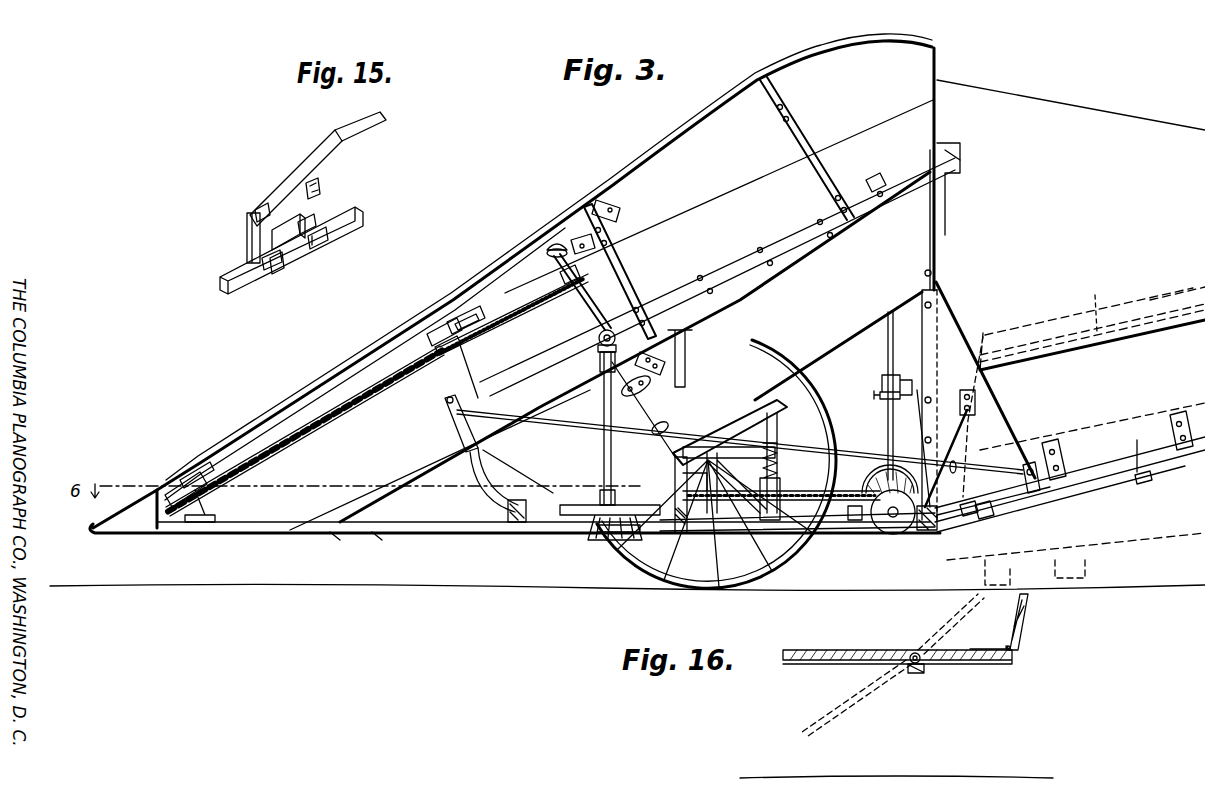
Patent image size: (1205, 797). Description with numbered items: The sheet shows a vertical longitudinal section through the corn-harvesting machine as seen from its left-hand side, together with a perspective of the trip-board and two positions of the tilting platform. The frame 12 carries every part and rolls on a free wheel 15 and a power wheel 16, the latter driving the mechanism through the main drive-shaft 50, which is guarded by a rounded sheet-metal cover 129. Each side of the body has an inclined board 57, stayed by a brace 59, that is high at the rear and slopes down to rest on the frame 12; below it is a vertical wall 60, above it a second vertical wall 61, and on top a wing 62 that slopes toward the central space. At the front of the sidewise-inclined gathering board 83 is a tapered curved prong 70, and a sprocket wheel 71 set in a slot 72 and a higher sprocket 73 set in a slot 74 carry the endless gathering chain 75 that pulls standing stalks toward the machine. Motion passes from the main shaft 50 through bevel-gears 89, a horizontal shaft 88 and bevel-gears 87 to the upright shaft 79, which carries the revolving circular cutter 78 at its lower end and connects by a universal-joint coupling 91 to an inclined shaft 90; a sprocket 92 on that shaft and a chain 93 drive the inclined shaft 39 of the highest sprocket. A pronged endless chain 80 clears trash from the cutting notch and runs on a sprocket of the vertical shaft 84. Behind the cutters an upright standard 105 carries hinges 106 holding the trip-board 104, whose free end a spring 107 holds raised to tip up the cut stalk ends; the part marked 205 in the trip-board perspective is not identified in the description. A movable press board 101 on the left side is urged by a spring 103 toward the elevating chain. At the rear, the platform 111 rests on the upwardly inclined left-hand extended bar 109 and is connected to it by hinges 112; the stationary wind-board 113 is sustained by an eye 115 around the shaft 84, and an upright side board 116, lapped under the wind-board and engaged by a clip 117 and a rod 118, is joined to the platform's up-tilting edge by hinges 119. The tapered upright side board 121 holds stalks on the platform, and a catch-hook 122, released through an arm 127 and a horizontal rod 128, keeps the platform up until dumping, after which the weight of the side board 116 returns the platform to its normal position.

In FIG. 3, the frame 12 is at (946, 520).
In FIG. 3, the free rolling wheel 15 is at (748, 570).
In FIG. 3, the power wheel 16 is at (1150, 508).
In FIG. 3, the inclined shaft 39 is at (514, 310).
In FIG. 3, the main drive-shaft 50 is at (922, 530).
In FIG. 3, the inclined board 57 is at (802, 255).
In FIG. 3, the brace 59 is at (688, 352).
In FIG. 3, the vertical wall 60 is at (856, 322).
In FIG. 3, the vertical wall 61 is at (719, 196).
In FIG. 3, the wing 62 is at (820, 60).
In FIG. 3, the tapered curved prong 70 is at (122, 520).
In FIG. 3, the sprocket wheel 71 is at (182, 480).
In FIG. 3, the slot 72 is at (196, 468).
In FIG. 3, the sprocket 73 is at (445, 312).
In FIG. 3, the slot 74 is at (432, 314).
In FIG. 3, the endless gathering chain 75 is at (318, 408).
In FIG. 3, the circular cutter 78 is at (683, 496).
In FIG. 3, the upright shaft 79 is at (612, 416).
In FIG. 3, the endless chain 80 is at (858, 486).
In FIG. 3, the gathering board 83 is at (330, 372).
In FIG. 3, the vertical shaft 84 is at (887, 419).
In FIG. 3, the bevel-gears 87 is at (606, 540).
In FIG. 3, the horizontal shaft 88 is at (836, 527).
In FIG. 3, the bevel-gears 89 is at (878, 530).
In FIG. 3, the inclined shaft 90 is at (598, 320).
In FIG. 3, the universal-joint coupling 91 is at (597, 339).
In FIG. 3, the sprocket 92 is at (600, 270).
In FIG. 3, the chain 93 is at (515, 290).
In FIG. 3, the movable press board 101 is at (806, 232).
In FIG. 3, the spring 103 is at (758, 256).
In FIG. 15, the trip-board 104 is at (316, 154).
In FIG. 3, the trip-board 104 is at (746, 420).
In FIG. 3, the upright standard 105 is at (672, 470).
In FIG. 15, the hinges 106 is at (322, 188).
In FIG. 3, the spring 107 is at (790, 440).
In FIG. 3, the extended bar 109 is at (1100, 482).
In FIG. 16, the extended bar 109 is at (922, 673).
In FIG. 3, the platform 111 is at (1098, 470).
In FIG. 16, the platform 111 is at (850, 642).
In FIG. 3, the hinges 112 is at (988, 516).
In FIG. 16, the hinges 112 is at (914, 655).
In FIG. 3, the wind-board 113 is at (1100, 116).
In FIG. 3, the eye 115 is at (882, 384).
In FIG. 3, the upright side board 116 is at (1076, 436).
In FIG. 16, the upright side board 116 is at (1026, 612).
In FIG. 3, the clip 117 is at (1204, 290).
In FIG. 3, the rod 118 is at (1096, 305).
In FIG. 16, the hinges 119 is at (1005, 648).
In FIG. 3, the upright side board 121 is at (988, 403).
In FIG. 3, the catch-hook 122 is at (1040, 492).
In FIG. 3, the arm 127 is at (448, 432).
In FIG. 3, the rod 128 is at (548, 416).
In FIG. 3, the sheet-metal cover 129 is at (878, 462).
In FIG. 15, the post 205 is at (258, 237).